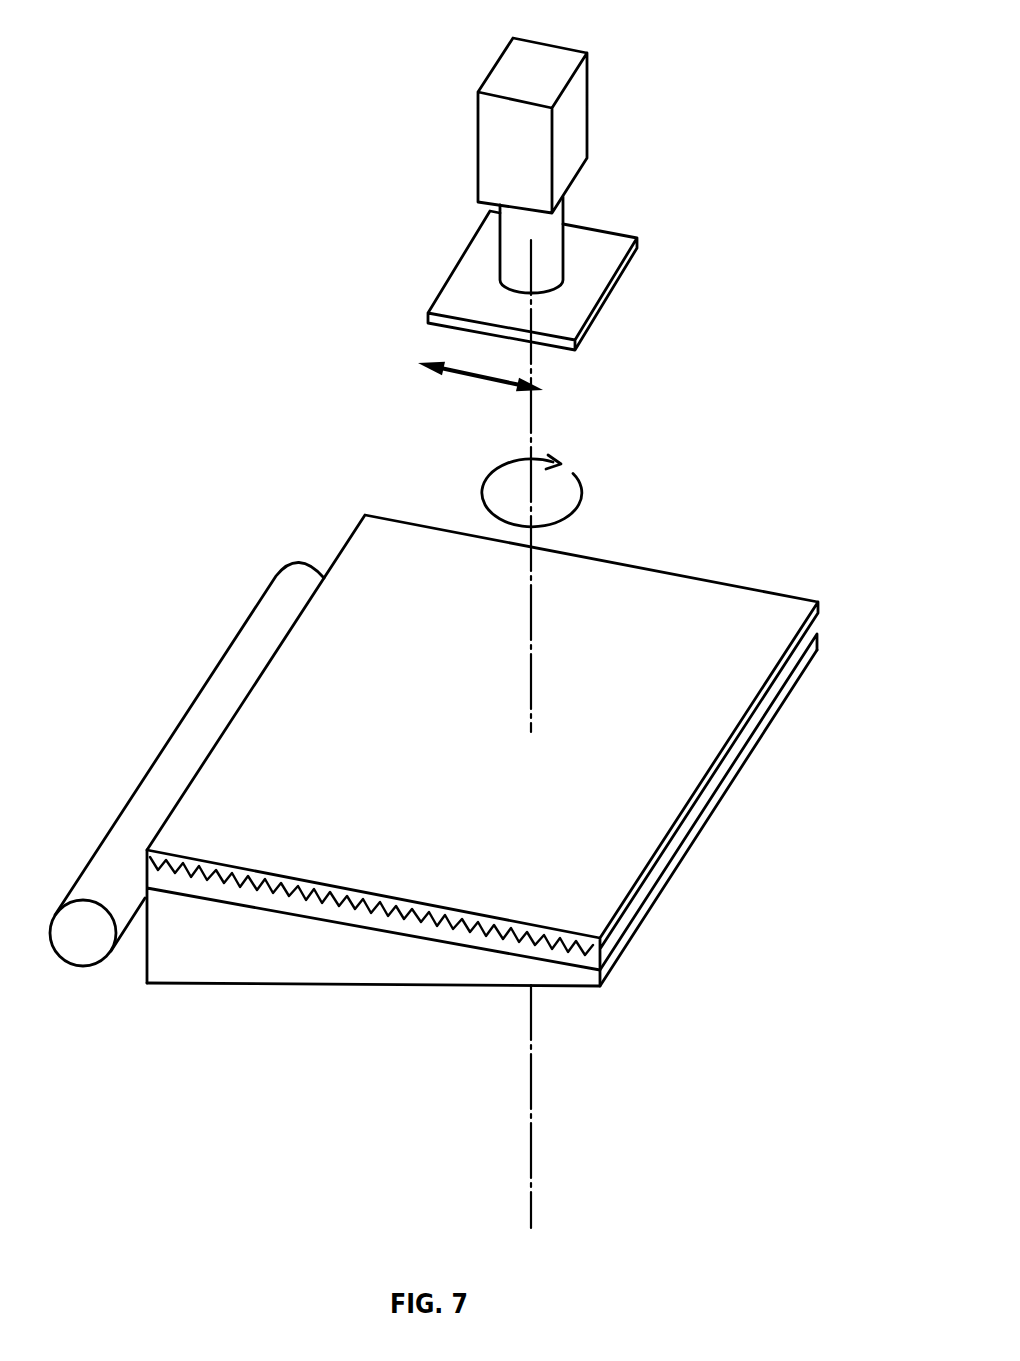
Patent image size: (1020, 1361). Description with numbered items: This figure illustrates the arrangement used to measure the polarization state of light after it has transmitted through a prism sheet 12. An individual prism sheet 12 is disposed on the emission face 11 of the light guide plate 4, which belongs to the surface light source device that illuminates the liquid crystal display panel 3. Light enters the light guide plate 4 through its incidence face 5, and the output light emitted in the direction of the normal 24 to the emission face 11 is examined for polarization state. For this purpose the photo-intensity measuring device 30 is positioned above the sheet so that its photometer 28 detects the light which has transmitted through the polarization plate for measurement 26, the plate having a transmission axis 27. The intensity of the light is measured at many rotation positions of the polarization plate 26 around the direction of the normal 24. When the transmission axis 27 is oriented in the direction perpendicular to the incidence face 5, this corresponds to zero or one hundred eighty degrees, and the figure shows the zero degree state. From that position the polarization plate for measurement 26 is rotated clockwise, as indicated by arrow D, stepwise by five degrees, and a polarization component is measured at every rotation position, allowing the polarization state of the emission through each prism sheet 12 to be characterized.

The photo-intensity measuring device 30 is at (480, 78).
The photometer 28 is at (572, 137).
The polarization plate for measurement 26 is at (583, 297).
The transmission axis 27 is at (472, 382).
The arrow D is at (577, 507).
The normal 24 is at (530, 650).
The prism sheet 12 is at (645, 778).
The emission face 11 is at (380, 922).
The light guide plate 4 is at (230, 962).
The liquid crystal display panel 3 is at (340, 988).
The incidence face 5 is at (142, 955).